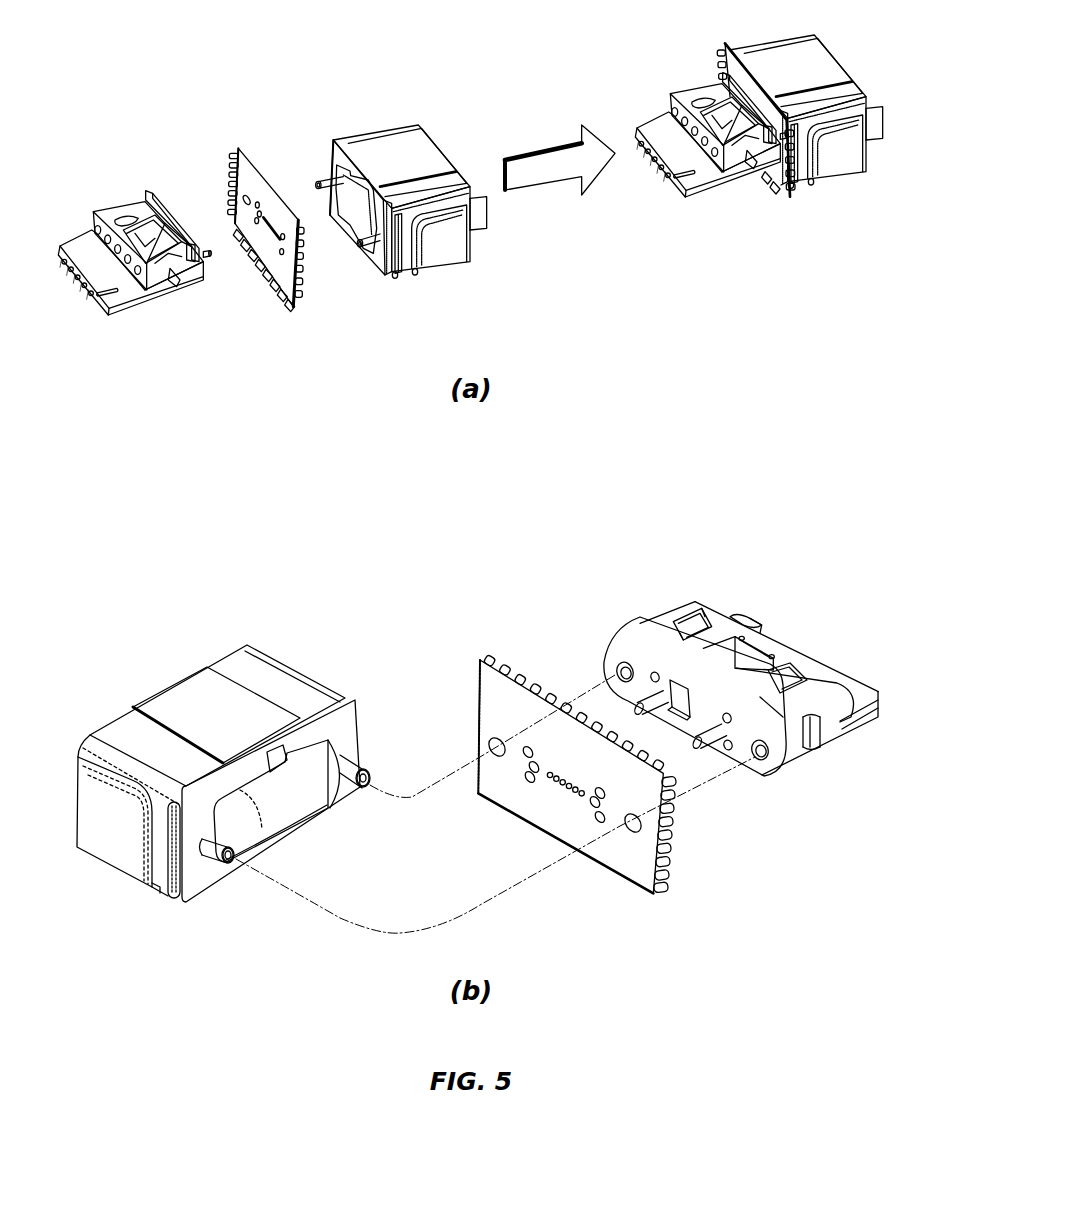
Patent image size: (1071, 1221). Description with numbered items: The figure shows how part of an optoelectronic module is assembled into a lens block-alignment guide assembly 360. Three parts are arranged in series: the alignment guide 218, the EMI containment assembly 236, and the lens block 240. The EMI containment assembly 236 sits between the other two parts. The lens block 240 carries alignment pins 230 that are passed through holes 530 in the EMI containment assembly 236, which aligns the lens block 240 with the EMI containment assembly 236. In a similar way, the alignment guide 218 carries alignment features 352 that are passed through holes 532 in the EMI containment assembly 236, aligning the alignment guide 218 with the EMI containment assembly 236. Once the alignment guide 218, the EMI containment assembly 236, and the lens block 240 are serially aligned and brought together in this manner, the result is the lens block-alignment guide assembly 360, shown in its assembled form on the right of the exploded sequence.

The alignment guide 218 is at (282, 482).
The alignment pins 230 is at (651, 712).
The EMI containment assembly 236 is at (424, 493).
The lens block 240 is at (468, 443).
The alignment features 352 is at (232, 852).
The lens block-alignment guide assembly 360 is at (758, 98).
The holes 530 is at (590, 808).
The holes 532 is at (494, 742).